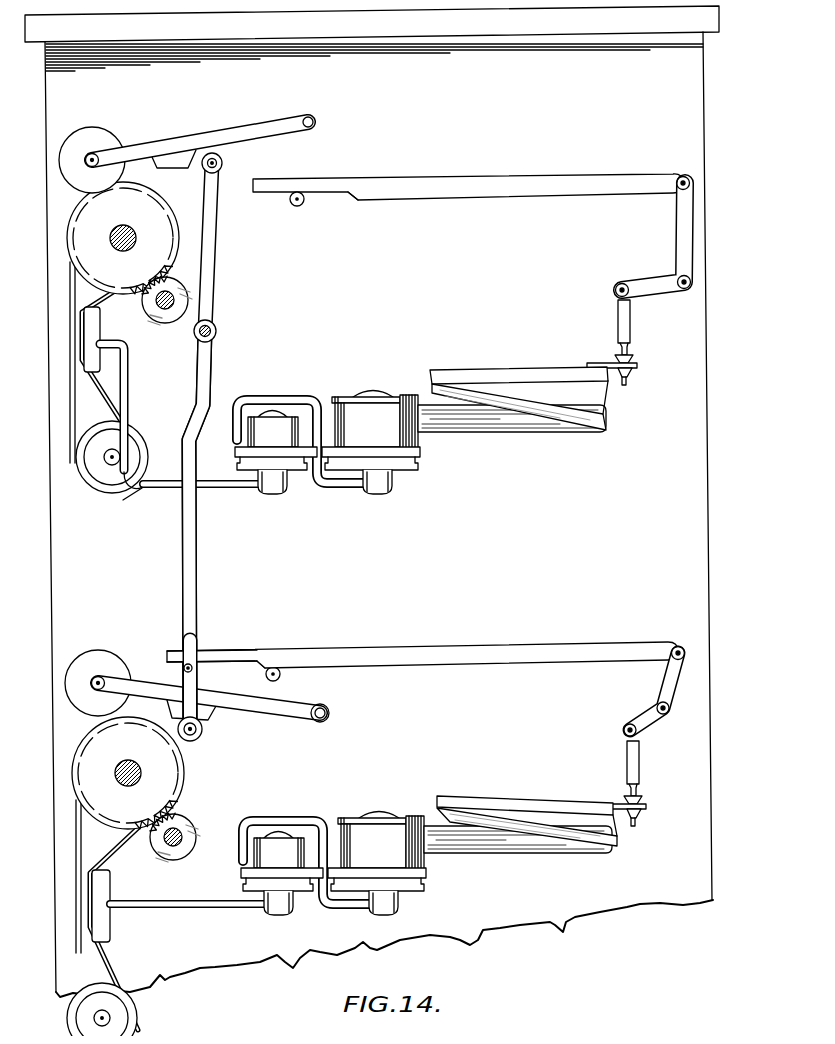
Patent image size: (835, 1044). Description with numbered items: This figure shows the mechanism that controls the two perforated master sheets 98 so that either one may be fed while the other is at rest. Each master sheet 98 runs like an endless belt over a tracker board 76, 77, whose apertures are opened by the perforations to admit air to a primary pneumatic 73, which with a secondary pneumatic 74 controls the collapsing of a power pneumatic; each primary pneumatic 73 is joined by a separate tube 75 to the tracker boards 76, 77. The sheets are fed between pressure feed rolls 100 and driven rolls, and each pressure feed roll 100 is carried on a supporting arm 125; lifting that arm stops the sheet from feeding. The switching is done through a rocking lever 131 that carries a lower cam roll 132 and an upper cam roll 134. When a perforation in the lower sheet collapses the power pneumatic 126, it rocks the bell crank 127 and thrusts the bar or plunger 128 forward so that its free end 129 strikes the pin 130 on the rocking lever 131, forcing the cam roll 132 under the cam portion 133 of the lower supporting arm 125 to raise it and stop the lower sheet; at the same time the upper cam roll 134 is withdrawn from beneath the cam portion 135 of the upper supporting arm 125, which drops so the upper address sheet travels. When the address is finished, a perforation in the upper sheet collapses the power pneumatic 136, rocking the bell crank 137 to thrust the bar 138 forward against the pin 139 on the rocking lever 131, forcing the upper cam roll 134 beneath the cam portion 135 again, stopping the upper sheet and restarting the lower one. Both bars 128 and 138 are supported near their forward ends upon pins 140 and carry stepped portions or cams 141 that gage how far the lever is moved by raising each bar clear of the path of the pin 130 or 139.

The primary pneumatic 73 is at (283, 422).
The secondary pneumatic 74 is at (382, 410).
The tube 75 is at (245, 482).
The tracker board 76 is at (88, 330).
The tracker board 77 is at (105, 920).
The master sheet 98 is at (72, 283).
The feed roll 100 is at (87, 137).
The supporting arm 125 is at (192, 140).
The power pneumatic 126 is at (522, 808).
The bell crank 127 is at (648, 715).
The bar or plunger 128 is at (417, 653).
The free end 129 is at (210, 658).
The pin 130 is at (184, 669).
The rocking lever 131 is at (192, 573).
The cam roll 132 is at (202, 733).
The cam portion 133 is at (172, 709).
The upper cam roll 134 is at (223, 163).
The cam portion 135 is at (177, 162).
The power pneumatic 136 is at (505, 373).
The bell crank 137 is at (678, 235).
The bar 138 is at (489, 179).
The pin 139 is at (213, 192).
The pin 140 is at (298, 206).
The stepped portion or cam 141 is at (352, 198).